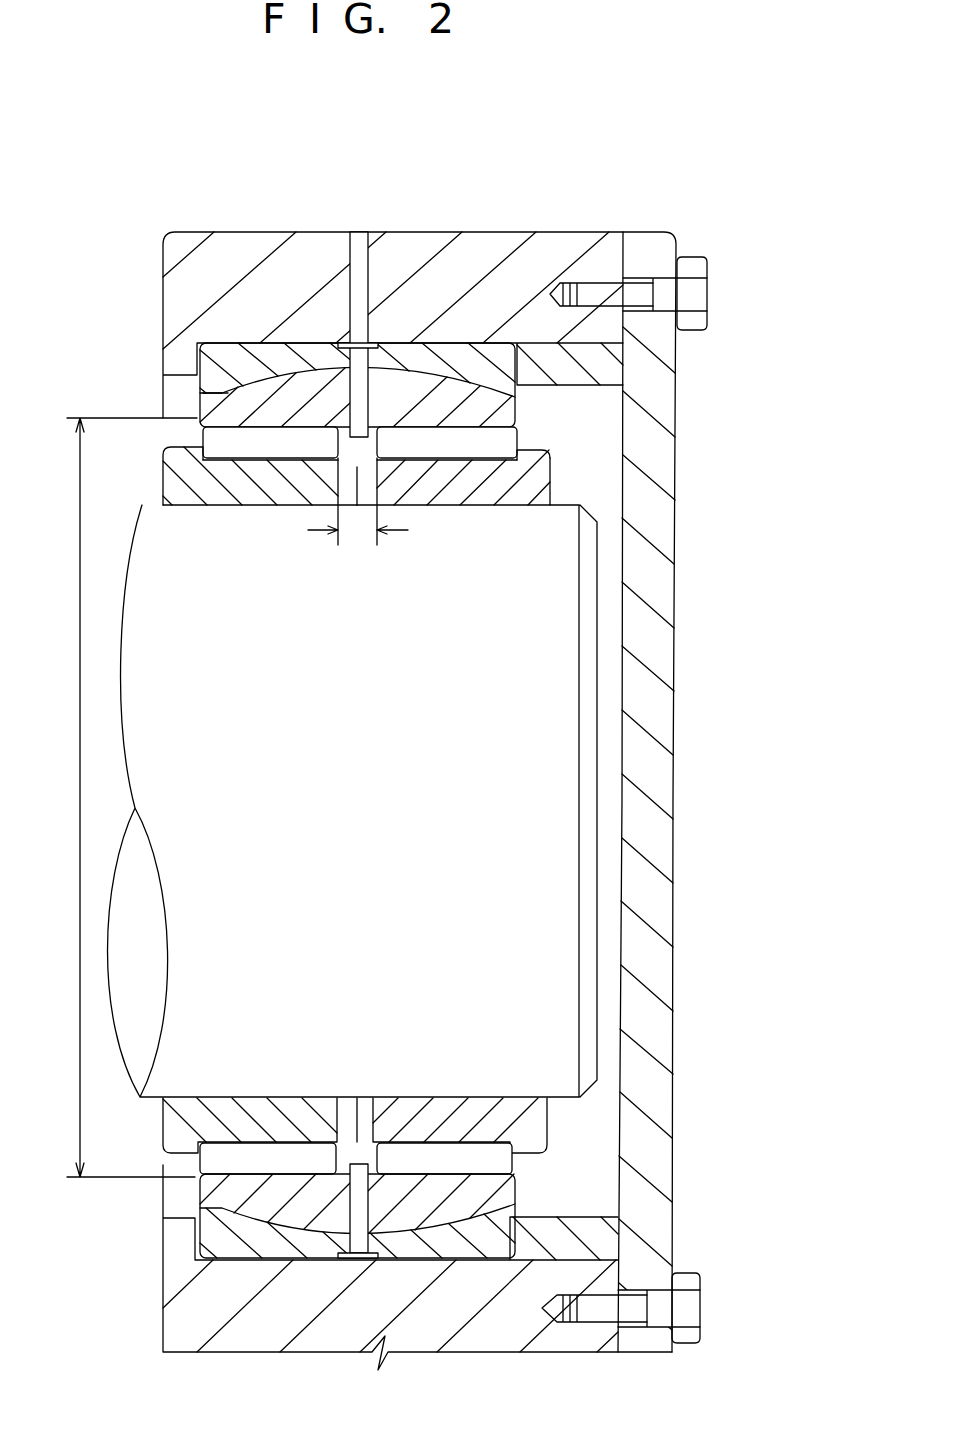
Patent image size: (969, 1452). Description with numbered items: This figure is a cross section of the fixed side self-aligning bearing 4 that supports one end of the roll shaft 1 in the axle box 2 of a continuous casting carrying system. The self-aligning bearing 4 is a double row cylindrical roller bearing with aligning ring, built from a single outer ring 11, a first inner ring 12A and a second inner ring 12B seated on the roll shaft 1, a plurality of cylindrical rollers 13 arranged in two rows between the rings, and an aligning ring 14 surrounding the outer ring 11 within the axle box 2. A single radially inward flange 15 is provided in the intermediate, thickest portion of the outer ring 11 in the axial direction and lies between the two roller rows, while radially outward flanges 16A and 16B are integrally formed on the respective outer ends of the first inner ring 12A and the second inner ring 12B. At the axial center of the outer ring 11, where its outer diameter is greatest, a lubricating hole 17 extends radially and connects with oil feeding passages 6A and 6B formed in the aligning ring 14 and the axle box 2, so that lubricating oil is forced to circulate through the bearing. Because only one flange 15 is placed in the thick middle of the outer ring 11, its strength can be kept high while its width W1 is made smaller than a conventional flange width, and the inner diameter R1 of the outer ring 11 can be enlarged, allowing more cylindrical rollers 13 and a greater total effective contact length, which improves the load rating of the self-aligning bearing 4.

The roll shaft 1 is at (540, 773).
The axle box 2 is at (398, 247).
The self-aligning bearing 4 is at (277, 358).
The oil feeding passage 6A is at (425, 390).
The oil feeding passage 6B is at (360, 275).
The outer ring 11 is at (510, 343).
The first inner ring 12A is at (213, 492).
The second inner ring 12B is at (510, 493).
The cylindrical rollers 13 is at (267, 443).
The aligning ring 14 is at (258, 352).
The flange 15 is at (413, 447).
The flange 16A is at (200, 452).
The flange 16B is at (537, 450).
The lubricating hole 17 is at (311, 393).
The inner diameter of the outer ring R1 is at (115, 797).
The width of the flange W1 is at (358, 551).